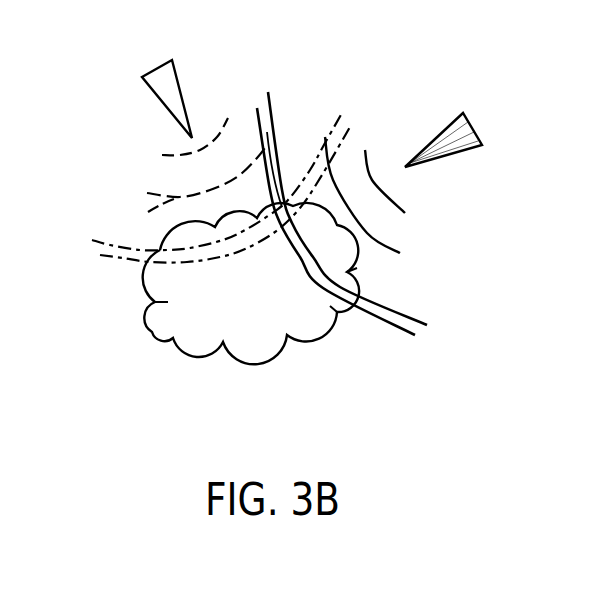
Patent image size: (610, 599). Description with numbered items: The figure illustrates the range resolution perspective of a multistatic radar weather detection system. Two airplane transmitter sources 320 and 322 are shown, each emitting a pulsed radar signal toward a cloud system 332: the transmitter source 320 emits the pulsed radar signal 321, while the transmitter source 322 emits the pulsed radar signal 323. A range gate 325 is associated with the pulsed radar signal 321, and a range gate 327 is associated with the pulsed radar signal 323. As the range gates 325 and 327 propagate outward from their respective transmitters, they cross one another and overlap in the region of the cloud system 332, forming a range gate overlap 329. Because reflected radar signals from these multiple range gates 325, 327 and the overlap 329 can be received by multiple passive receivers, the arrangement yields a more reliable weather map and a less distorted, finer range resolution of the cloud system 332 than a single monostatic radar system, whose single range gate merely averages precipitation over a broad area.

The airplane transmitter source 320 is at (480, 123).
The pulsed radar signal 321 is at (400, 253).
The airplane transmitter source 322 is at (147, 72).
The pulsed radar signal 323 is at (142, 205).
The range gate 325 is at (437, 312).
The range gate 327 is at (90, 238).
The range gate overlap 329 is at (288, 178).
The cloud system 332 is at (155, 333).